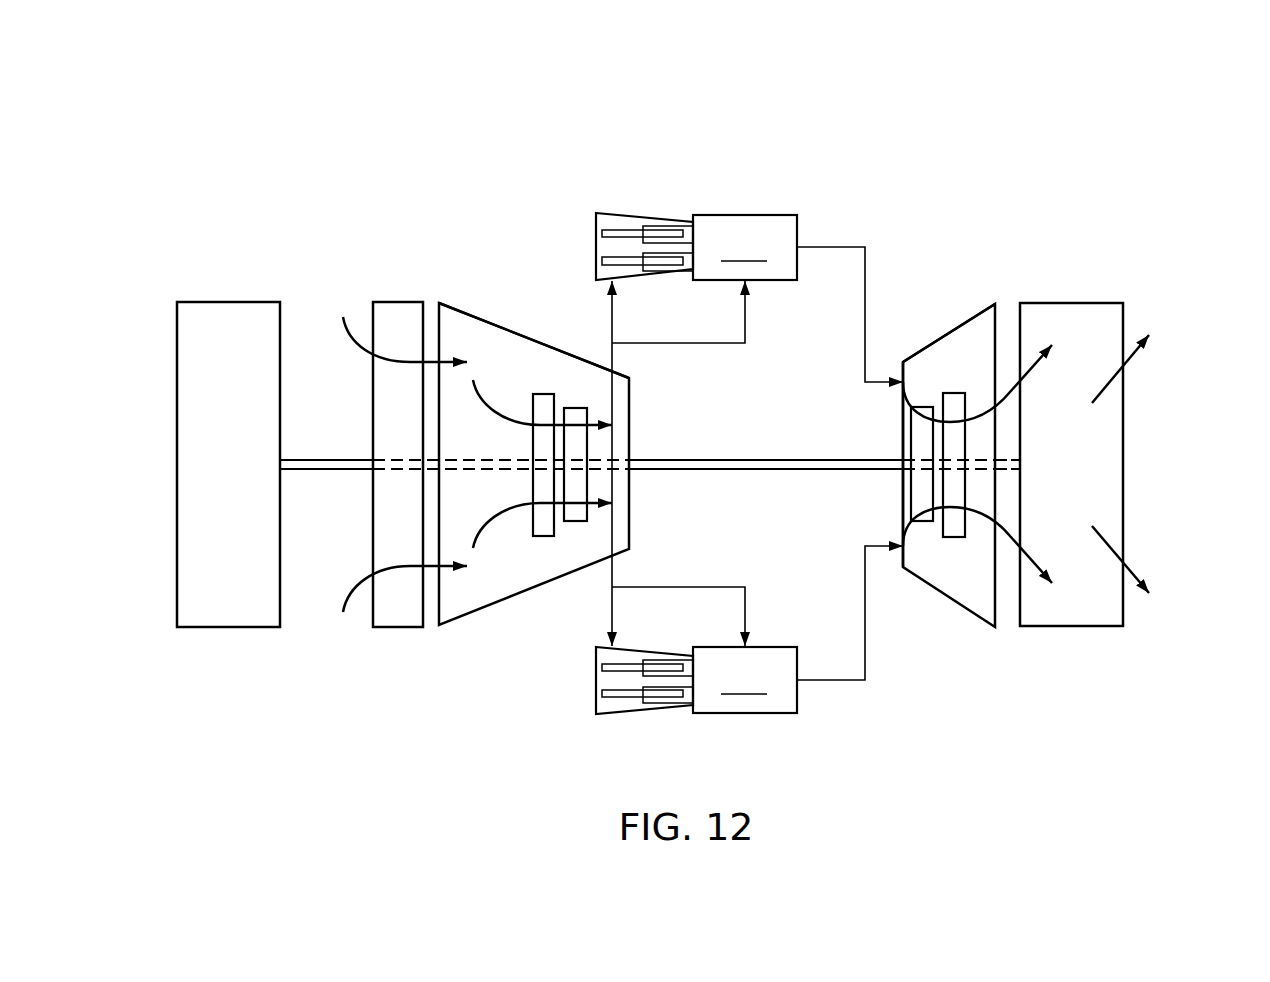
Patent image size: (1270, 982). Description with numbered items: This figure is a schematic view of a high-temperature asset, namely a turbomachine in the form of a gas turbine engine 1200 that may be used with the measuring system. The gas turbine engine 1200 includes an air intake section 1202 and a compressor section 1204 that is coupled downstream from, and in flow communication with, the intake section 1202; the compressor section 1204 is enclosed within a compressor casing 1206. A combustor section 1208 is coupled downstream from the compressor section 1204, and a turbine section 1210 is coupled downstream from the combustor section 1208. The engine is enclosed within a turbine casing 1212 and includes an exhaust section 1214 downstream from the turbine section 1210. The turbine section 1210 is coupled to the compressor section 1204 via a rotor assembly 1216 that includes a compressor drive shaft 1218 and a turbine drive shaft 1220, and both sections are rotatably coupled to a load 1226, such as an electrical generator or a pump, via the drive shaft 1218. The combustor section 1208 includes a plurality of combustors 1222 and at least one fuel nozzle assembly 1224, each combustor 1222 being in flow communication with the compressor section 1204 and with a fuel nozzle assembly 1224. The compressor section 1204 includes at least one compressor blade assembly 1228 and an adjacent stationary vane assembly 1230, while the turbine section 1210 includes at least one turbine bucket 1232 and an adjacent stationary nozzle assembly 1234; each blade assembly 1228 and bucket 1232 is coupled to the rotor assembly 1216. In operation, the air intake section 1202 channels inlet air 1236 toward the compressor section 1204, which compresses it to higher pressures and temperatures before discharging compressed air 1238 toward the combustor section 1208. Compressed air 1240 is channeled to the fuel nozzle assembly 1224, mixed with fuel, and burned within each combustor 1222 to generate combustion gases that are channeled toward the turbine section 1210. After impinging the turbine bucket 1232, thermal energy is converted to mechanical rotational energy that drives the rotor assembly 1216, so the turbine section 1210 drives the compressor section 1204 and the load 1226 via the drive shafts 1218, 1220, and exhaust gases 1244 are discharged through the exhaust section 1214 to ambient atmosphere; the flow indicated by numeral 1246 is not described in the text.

The gas turbine engine 1200 is at (328, 88).
The air intake section 1202 is at (397, 302).
The compressor section 1204 is at (450, 290).
The compressor casing 1206 is at (547, 343).
The combustor section 1208 is at (903, 225).
The turbine section 1210 is at (969, 298).
The turbine casing 1212 is at (905, 360).
The exhaust section 1214 is at (1072, 302).
The rotor assembly 1216 is at (696, 447).
The compressor drive shaft 1218 is at (470, 465).
The turbine drive shaft 1220 is at (1005, 478).
The combustor 1222 is at (798, 464).
The fuel nozzle assembly 1224 is at (630, 213).
The load 1226 is at (230, 302).
The compressor blade assembly 1228 is at (578, 522).
The stationary vane assembly 1230 is at (543, 537).
The turbine bucket 1232 is at (922, 521).
The stationary nozzle assembly 1234 is at (955, 537).
The inlet air 1236 is at (347, 345).
The compressed air 1238 is at (487, 380).
The compressed air 1240 is at (612, 316).
The exhaust gases 1244 is at (1130, 360).
The turbine flow 1246 is at (1010, 395).